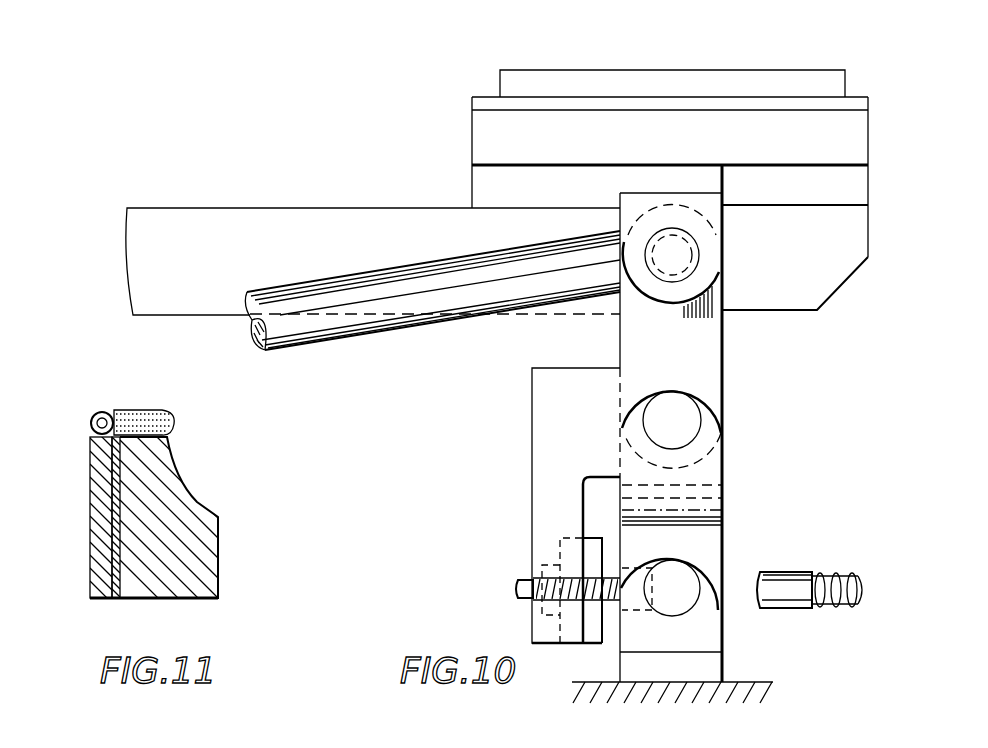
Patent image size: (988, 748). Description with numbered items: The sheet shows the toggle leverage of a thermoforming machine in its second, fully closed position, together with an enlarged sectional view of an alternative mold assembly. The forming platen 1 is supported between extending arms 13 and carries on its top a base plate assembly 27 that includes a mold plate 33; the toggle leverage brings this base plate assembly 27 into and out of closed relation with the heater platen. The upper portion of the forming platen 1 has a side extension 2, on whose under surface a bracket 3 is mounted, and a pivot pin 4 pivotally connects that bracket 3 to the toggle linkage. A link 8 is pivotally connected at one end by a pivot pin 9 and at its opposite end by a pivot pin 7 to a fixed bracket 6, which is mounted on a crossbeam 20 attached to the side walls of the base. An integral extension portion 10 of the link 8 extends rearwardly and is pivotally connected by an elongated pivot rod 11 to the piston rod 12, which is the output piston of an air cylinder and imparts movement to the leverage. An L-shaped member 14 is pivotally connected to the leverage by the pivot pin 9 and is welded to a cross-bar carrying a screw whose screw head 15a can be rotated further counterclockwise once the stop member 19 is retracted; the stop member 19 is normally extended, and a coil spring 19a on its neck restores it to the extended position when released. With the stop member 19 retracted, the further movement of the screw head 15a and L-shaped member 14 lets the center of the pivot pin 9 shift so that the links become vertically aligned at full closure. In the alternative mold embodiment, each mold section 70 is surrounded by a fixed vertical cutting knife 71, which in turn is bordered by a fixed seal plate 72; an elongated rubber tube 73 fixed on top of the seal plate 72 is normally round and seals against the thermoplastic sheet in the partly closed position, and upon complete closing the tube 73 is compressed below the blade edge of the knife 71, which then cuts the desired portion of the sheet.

In FIG. 10, the forming platen 1 is at (877, 182).
In FIG. 10, the side extension 2 is at (855, 142).
In FIG. 10, the bracket 3 is at (708, 175).
In FIG. 10, the pivot pin 4 is at (690, 270).
In FIG. 10, the fixed bracket 6 is at (722, 637).
In FIG. 10, the pivot pin 7 is at (690, 568).
In FIG. 10, the link 8 is at (712, 497).
In FIG. 10, the pivot pin 9 is at (685, 415).
In FIG. 10, the integral extension portion 10 is at (712, 347).
In FIG. 10, the elongated pivot rod 11 is at (690, 253).
In FIG. 10, the piston rod 12 is at (318, 345).
In FIG. 10, the extending arm 13 is at (210, 192).
In FIG. 10, the L-shaped member 14 is at (550, 393).
In FIG. 10, the screw head 15a is at (638, 600).
In FIG. 10, the stop member 19 is at (790, 572).
In FIG. 10, the coil spring 19a is at (845, 575).
In FIG. 10, the crossbeam 20 is at (750, 682).
In FIG. 10, the base plate assembly 27 is at (493, 78).
In FIG. 10, the mold plate 33 is at (468, 103).
In FIG. 11, the mold section 70 is at (195, 510).
In FIG. 11, the cutting knife 71 is at (114, 570).
In FIG. 11, the seal plate 72 is at (102, 530).
In FIG. 11, the rubber tube 73 is at (92, 420).